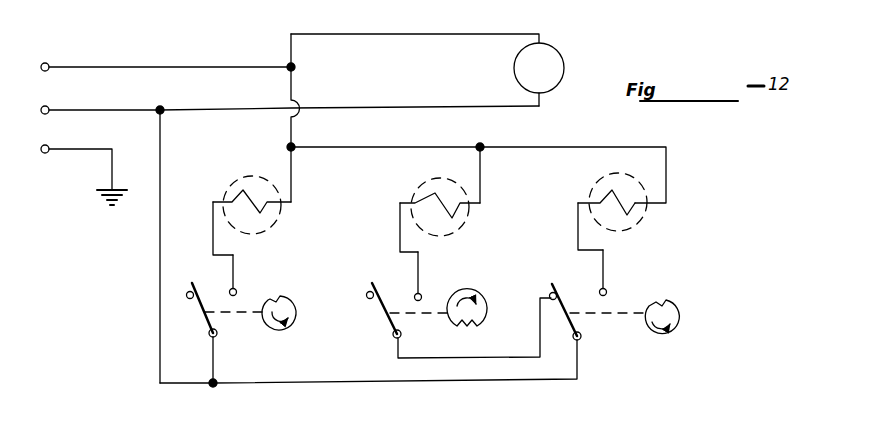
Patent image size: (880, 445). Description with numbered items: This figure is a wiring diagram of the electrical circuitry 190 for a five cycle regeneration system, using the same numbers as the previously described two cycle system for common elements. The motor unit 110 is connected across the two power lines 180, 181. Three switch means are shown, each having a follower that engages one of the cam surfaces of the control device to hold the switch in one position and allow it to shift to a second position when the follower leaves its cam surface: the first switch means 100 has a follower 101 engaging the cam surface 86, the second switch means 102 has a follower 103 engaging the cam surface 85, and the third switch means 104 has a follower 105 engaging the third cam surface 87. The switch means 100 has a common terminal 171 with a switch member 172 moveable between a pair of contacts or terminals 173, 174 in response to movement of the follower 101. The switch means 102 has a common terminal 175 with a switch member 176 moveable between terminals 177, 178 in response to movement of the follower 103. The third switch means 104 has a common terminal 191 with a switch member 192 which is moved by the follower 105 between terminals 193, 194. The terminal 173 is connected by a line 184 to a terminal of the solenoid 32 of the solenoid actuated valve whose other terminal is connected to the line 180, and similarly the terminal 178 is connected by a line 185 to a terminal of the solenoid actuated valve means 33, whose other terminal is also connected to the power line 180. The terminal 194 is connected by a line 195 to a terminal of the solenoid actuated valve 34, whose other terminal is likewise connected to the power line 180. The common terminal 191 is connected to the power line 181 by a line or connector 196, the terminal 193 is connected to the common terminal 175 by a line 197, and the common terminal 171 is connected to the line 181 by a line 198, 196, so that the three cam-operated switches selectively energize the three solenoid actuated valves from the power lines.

The power line 180 is at (224, 46).
The power line 181 is at (253, 90).
The motor unit 110 is at (565, 63).
The electrical circuitry for five cycle system 190 is at (683, 193).
The solenoid 32 is at (256, 178).
The solenoid actuated valve means 33 is at (437, 184).
The solenoid actuated valve 34 is at (604, 184).
The line 184 is at (213, 222).
The line 185 is at (400, 234).
The line 195 is at (603, 253).
The terminal 174 is at (237, 287).
The terminal 178 is at (422, 292).
The terminal 194 is at (607, 290).
The terminal 173 is at (187, 293).
The terminal 177 is at (366, 294).
The terminal 193 is at (551, 293).
The switch member 172 is at (204, 308).
The switch member 176 is at (383, 308).
The switch member 192 is at (567, 300).
The common terminal 171 is at (208, 338).
The common terminal 175 is at (394, 338).
The common terminal 191 is at (574, 341).
The line 198 is at (212, 363).
The line 197 is at (522, 357).
The line or connector 196 is at (412, 381).
The cam surface 86 is at (282, 294).
The cam surface 85 is at (474, 298).
The cam surface 87 is at (678, 326).
The follower 101 is at (250, 316).
The follower 103 is at (415, 313).
The follower 105 is at (612, 316).
The first switch means 100 is at (232, 330).
The second switch means 102 is at (407, 323).
The third switch means 104 is at (586, 328).